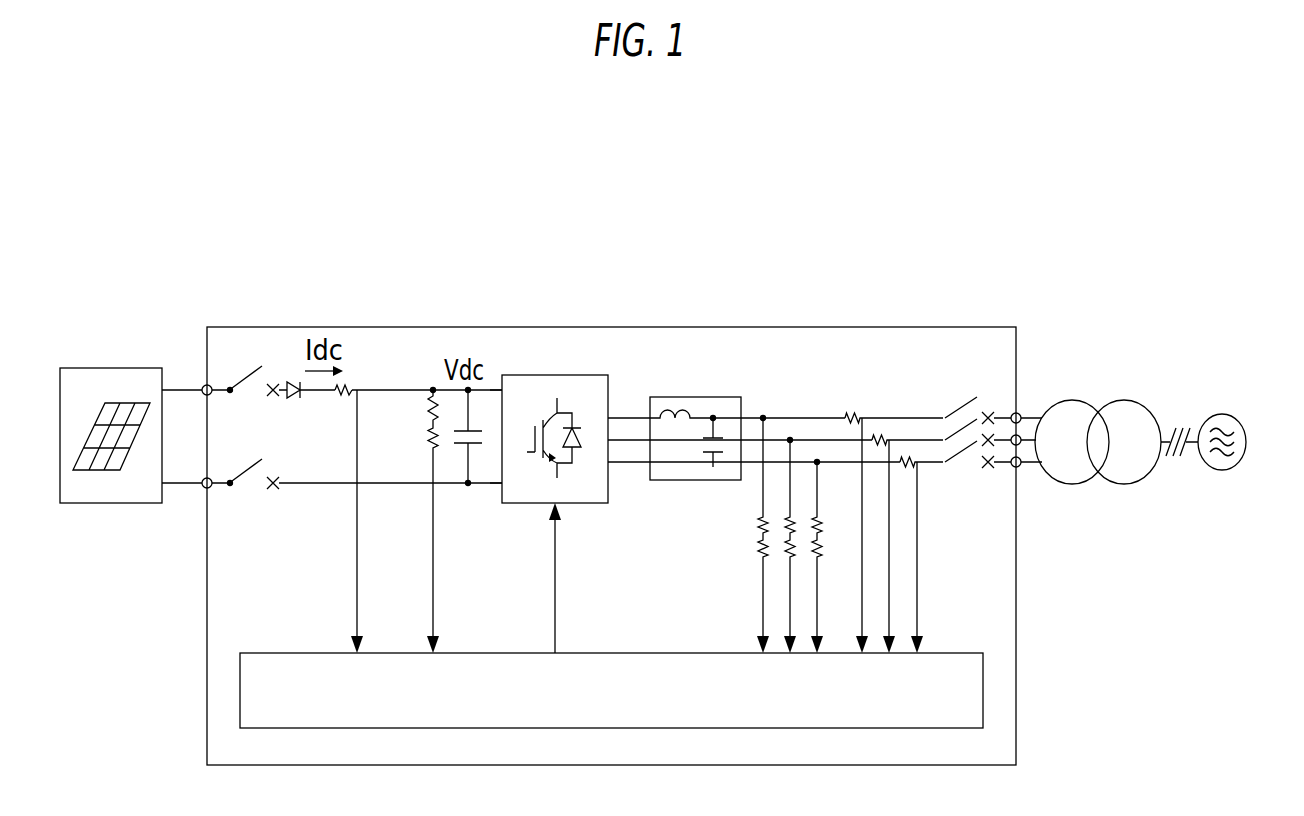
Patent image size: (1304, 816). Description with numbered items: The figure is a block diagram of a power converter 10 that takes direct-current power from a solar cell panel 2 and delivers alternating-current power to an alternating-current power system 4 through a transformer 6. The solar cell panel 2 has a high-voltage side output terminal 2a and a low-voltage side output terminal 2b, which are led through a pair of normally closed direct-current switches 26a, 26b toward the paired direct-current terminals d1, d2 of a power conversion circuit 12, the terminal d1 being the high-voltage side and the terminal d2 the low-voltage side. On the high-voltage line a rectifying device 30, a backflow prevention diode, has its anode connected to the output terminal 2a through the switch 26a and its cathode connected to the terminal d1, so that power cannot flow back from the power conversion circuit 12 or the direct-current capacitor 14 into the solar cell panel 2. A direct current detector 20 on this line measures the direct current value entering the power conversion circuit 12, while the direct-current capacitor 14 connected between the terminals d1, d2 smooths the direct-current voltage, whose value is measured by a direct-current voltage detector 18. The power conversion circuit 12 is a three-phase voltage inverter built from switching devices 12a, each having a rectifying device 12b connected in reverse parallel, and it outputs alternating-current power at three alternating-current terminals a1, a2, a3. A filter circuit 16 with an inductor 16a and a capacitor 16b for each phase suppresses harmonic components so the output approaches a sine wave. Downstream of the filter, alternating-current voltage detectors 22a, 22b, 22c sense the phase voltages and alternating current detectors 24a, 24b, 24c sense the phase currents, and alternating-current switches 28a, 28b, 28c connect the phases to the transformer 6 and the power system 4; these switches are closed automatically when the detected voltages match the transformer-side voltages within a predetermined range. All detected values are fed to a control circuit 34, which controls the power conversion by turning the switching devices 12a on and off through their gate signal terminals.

The solar cell panel 2 is at (110, 368).
The high-voltage side output terminal 2a is at (163, 388).
The low-voltage side output terminal 2b is at (163, 485).
The alternating-current power system 4 is at (1223, 414).
The transformer 6 is at (1128, 400).
The power converter 10 is at (994, 320).
The power conversion circuit 12 is at (568, 366).
The switching device 12a is at (541, 426).
The rectifying device 12b is at (582, 436).
The direct-current capacitor 14 is at (458, 448).
The filter circuit 16 is at (709, 353).
The inductor 16a is at (678, 413).
The capacitor 16b is at (722, 432).
The direct-current voltage detector 18 is at (431, 394).
The direct current detector 20 is at (357, 388).
The alternating-current voltage detector 22a is at (758, 530).
The alternating-current voltage detector 22b is at (788, 546).
The alternating-current voltage detector 22c is at (815, 548).
The alternating current detector 24a is at (850, 414).
The alternating current detector 24b is at (878, 436).
The alternating current detector 24c is at (906, 458).
The direct-current switch 26a is at (240, 376).
The direct-current switch 26b is at (246, 472).
The alternating-current switch 28a is at (960, 406).
The alternating-current switch 28b is at (940, 446).
The alternating-current switch 28c is at (962, 470).
The rectifying device 30 is at (290, 386).
The control circuit 34 is at (985, 693).
The direct-current terminal d1 is at (500, 388).
The direct-current terminal d2 is at (500, 486).
The alternating-current terminal a1 is at (611, 416).
The alternating-current terminal a2 is at (609, 441).
The alternating-current terminal a3 is at (612, 464).